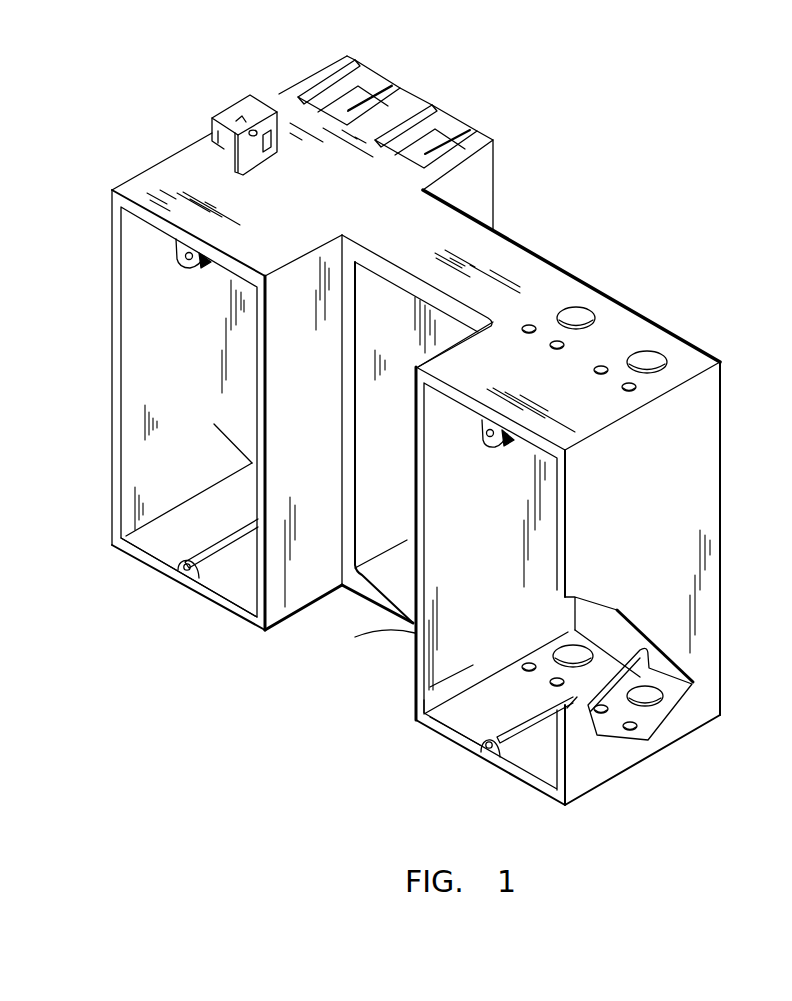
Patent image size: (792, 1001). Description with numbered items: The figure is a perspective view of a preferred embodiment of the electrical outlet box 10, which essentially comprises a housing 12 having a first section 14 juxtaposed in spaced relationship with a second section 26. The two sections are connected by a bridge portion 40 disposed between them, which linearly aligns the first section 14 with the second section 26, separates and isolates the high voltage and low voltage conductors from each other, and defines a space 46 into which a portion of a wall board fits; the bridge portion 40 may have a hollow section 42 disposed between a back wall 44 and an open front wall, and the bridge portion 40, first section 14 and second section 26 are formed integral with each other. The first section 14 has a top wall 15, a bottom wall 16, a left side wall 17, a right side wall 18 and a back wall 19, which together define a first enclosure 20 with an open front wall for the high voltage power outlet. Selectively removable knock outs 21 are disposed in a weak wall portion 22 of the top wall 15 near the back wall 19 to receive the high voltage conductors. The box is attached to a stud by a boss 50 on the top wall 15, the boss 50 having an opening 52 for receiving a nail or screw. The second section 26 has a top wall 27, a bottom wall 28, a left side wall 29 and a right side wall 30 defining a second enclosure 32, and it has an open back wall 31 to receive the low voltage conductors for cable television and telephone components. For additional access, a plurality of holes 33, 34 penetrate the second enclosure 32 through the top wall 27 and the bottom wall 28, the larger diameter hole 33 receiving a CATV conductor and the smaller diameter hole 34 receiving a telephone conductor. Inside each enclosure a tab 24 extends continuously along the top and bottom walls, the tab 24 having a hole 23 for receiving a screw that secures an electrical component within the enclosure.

The electrical outlet box 10 is at (592, 178).
The housing 12 is at (618, 285).
The first section 14 is at (139, 177).
The top wall 15 is at (207, 163).
The bottom wall 16 is at (168, 554).
The left side wall 17 is at (155, 323).
The right side wall 18 is at (290, 400).
The back wall 19 is at (440, 117).
The first enclosure 20 is at (215, 423).
The knock outs 21 is at (368, 75).
The weak wall portion 22 is at (390, 96).
The hole 23 is at (183, 578).
The tab 24 is at (228, 547).
The second section 26 is at (415, 678).
The top wall 27 is at (715, 370).
The bottom wall 28 is at (462, 730).
The left side wall 29 is at (485, 593).
The right side wall 30 is at (642, 530).
The open back wall 31 is at (612, 627).
The second enclosure 32 is at (416, 712).
The larger diameter hole 33 is at (657, 352).
The smaller diameter hole 34 is at (529, 333).
The bridge portion 40 is at (433, 237).
The hollow section 42 is at (383, 503).
The back wall 44 is at (450, 332).
The space 46 is at (315, 578).
The boss 50 is at (247, 97).
The opening 52 is at (260, 153).